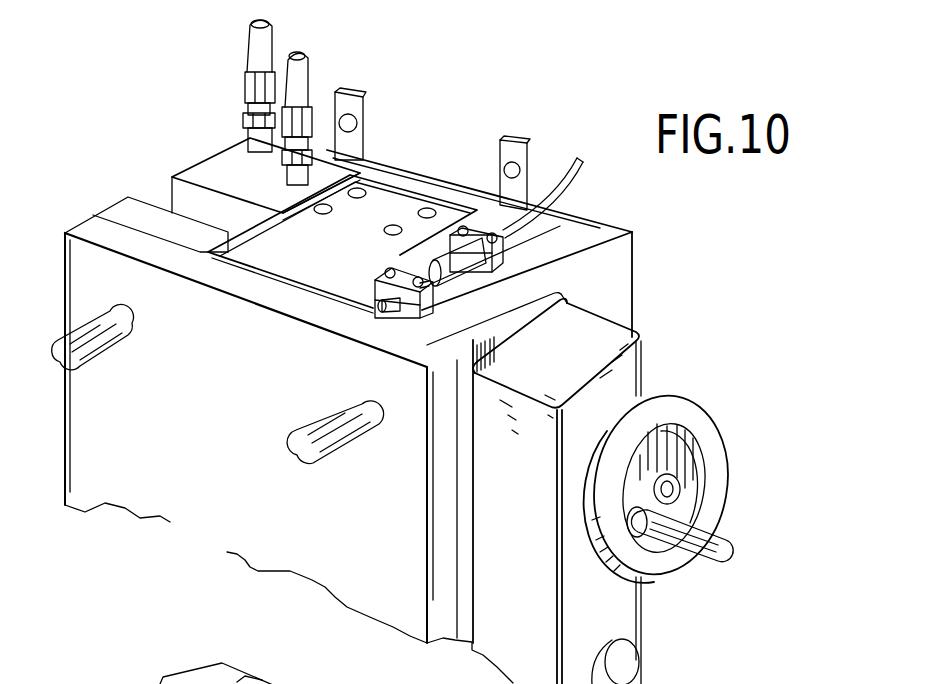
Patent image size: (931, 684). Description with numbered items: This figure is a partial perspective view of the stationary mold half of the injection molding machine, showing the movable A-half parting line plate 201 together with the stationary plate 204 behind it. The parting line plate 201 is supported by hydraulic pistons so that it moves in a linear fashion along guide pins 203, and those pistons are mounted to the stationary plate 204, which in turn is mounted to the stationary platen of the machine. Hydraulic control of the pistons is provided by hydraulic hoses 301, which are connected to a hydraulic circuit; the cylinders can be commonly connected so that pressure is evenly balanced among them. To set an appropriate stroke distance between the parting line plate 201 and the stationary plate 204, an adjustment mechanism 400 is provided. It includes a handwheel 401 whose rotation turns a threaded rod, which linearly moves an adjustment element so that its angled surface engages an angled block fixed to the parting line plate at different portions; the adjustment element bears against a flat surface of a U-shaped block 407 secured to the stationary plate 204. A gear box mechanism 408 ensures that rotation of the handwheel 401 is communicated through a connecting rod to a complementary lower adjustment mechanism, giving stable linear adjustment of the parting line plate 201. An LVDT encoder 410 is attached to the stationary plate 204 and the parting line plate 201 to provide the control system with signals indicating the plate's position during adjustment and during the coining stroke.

The A-half parting line plate 201 is at (87, 272).
The guide pins 203 is at (327, 465).
The stationary plate 204 is at (593, 238).
The hydraulic hoses 301 is at (262, 28).
The adjustment mechanism 400 is at (662, 373).
The handwheel 401 is at (713, 440).
The U-shaped block 407 is at (385, 205).
The gear box mechanism 408 is at (620, 617).
The LVDT encoder 410 is at (467, 260).